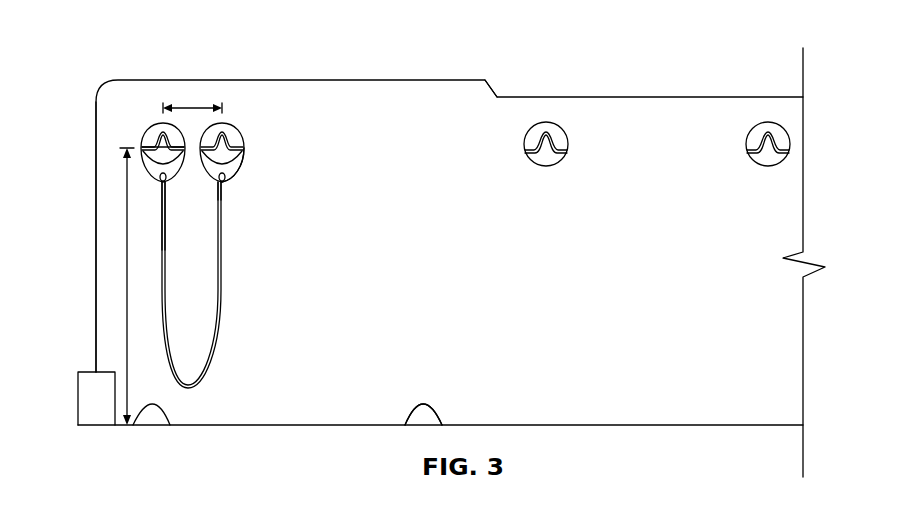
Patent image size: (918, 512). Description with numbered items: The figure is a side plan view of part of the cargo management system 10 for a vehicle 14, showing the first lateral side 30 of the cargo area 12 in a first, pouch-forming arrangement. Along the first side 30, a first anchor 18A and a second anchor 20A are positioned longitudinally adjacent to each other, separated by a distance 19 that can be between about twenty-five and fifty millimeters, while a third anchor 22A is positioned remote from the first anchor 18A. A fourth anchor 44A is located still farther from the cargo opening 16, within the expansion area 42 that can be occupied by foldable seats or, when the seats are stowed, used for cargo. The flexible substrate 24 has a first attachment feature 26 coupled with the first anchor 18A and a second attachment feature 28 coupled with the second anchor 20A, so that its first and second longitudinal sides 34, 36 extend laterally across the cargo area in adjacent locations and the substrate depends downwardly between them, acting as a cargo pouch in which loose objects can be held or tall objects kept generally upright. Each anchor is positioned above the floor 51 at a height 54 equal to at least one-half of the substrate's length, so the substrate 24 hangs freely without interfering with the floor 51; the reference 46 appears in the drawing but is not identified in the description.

The cargo management system 10 is at (205, 98).
The cargo area 12 is at (433, 265).
The vehicle 14 is at (502, 91).
The cargo opening 16 is at (86, 207).
The first anchor 18A is at (158, 122).
The distance 19 is at (197, 107).
The second anchor 20A is at (228, 122).
The third anchor 22A is at (546, 122).
The flexible substrate 24 is at (217, 305).
The first attachment feature 26 is at (152, 178).
The second attachment feature 28 is at (244, 158).
The first lateral side 30 is at (395, 231).
The first longitudinal side 34 is at (226, 187).
The second longitudinal side 36 is at (173, 184).
The expansion area 42 is at (655, 213).
The fourth anchor 44A is at (768, 122).
The direction of pull 46 is at (194, 246).
The floor 51 is at (258, 425).
The height 54 is at (126, 275).